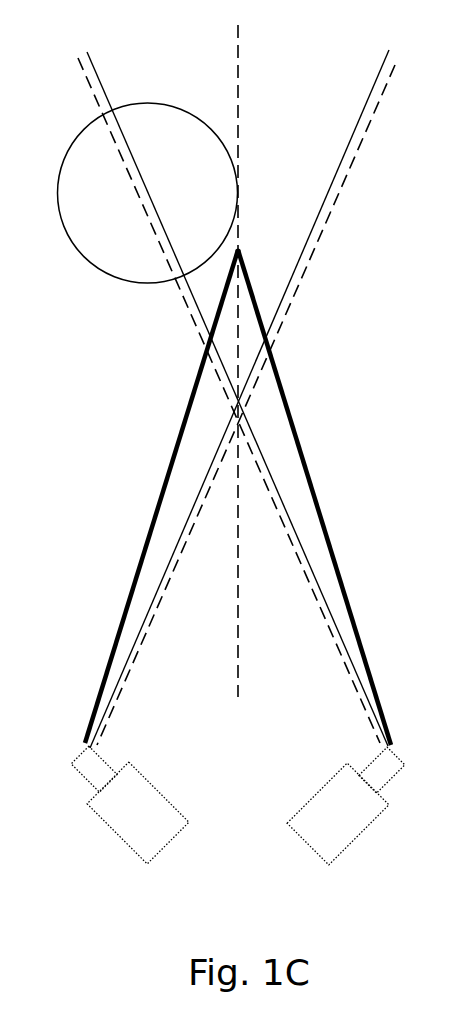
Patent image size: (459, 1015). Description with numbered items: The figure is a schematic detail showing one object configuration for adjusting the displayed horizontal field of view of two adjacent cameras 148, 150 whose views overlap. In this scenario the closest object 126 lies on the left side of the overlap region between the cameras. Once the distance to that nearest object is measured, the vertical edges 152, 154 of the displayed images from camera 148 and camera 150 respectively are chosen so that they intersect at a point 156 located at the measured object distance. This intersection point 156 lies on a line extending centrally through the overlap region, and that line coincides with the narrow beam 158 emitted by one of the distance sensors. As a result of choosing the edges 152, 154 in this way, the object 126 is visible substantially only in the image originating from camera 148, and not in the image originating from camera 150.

The closest object 126 is at (226, 187).
The camera 148 is at (145, 835).
The camera 150 is at (315, 845).
The vertical edge 152 is at (177, 437).
The vertical edge 154 is at (304, 460).
The intersection point 156 is at (244, 252).
The narrow beam 158 is at (240, 78).